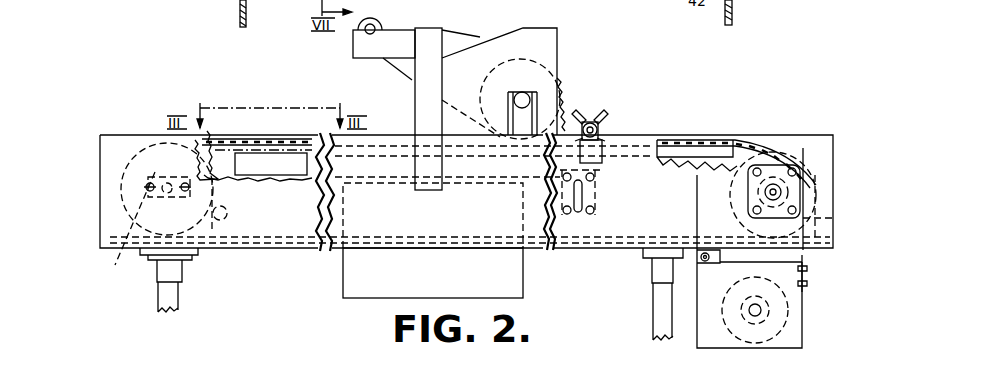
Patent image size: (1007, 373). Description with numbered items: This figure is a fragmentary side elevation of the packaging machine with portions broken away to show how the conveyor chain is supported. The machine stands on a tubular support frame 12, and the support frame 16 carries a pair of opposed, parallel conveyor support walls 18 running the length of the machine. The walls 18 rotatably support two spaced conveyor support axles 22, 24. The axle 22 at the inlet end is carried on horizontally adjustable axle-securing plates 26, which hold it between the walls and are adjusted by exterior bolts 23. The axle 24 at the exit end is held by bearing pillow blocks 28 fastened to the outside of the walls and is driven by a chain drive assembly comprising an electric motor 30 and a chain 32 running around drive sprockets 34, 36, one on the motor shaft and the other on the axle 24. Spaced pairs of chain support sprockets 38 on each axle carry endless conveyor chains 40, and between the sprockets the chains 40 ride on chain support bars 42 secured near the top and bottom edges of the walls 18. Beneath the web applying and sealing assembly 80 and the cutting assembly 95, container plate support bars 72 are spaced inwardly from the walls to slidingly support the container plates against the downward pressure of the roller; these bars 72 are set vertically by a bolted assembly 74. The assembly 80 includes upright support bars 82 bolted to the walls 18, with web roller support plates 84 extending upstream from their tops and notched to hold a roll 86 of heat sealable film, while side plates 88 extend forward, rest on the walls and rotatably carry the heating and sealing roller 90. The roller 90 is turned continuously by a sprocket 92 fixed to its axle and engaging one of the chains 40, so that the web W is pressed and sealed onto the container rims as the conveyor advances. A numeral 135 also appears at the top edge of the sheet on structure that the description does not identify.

The tubular support frame 12 is at (183, 297).
The support frame 16 is at (97, 218).
The conveyor support walls 18 is at (307, 212).
The conveyor support axle 22 is at (126, 229).
The exterior bolts 23 is at (182, 186).
The conveyor support axle 24 is at (778, 190).
The axle-securing plates 26 is at (174, 189).
The bearing pillow blocks 28 is at (792, 196).
The electric motor 30 is at (788, 310).
The chain 32 is at (808, 273).
The drive sprocket 34 is at (765, 313).
The drive sprocket 36 is at (820, 226).
The chain support sprockets 38 is at (200, 163).
The conveyor chains 40 is at (741, 136).
The chain support bars 42 is at (697, 138).
The container plate support bars 72 is at (283, 166).
The vertically adjustable bolted assembly 74 is at (596, 178).
The web applying and sealing assembly 80 is at (459, 95).
The support bars 82 is at (426, 33).
The web roller support plates 84 is at (364, 42).
The roll of web material 86 is at (382, 19).
The side plates 88 is at (545, 45).
The heating and sealing roller 90 is at (565, 80).
The sprocket 92 is at (438, 277).
The cutting assembly 95 is at (609, 116).
The partial numeral from adjacent figure 135 is at (646, 5).